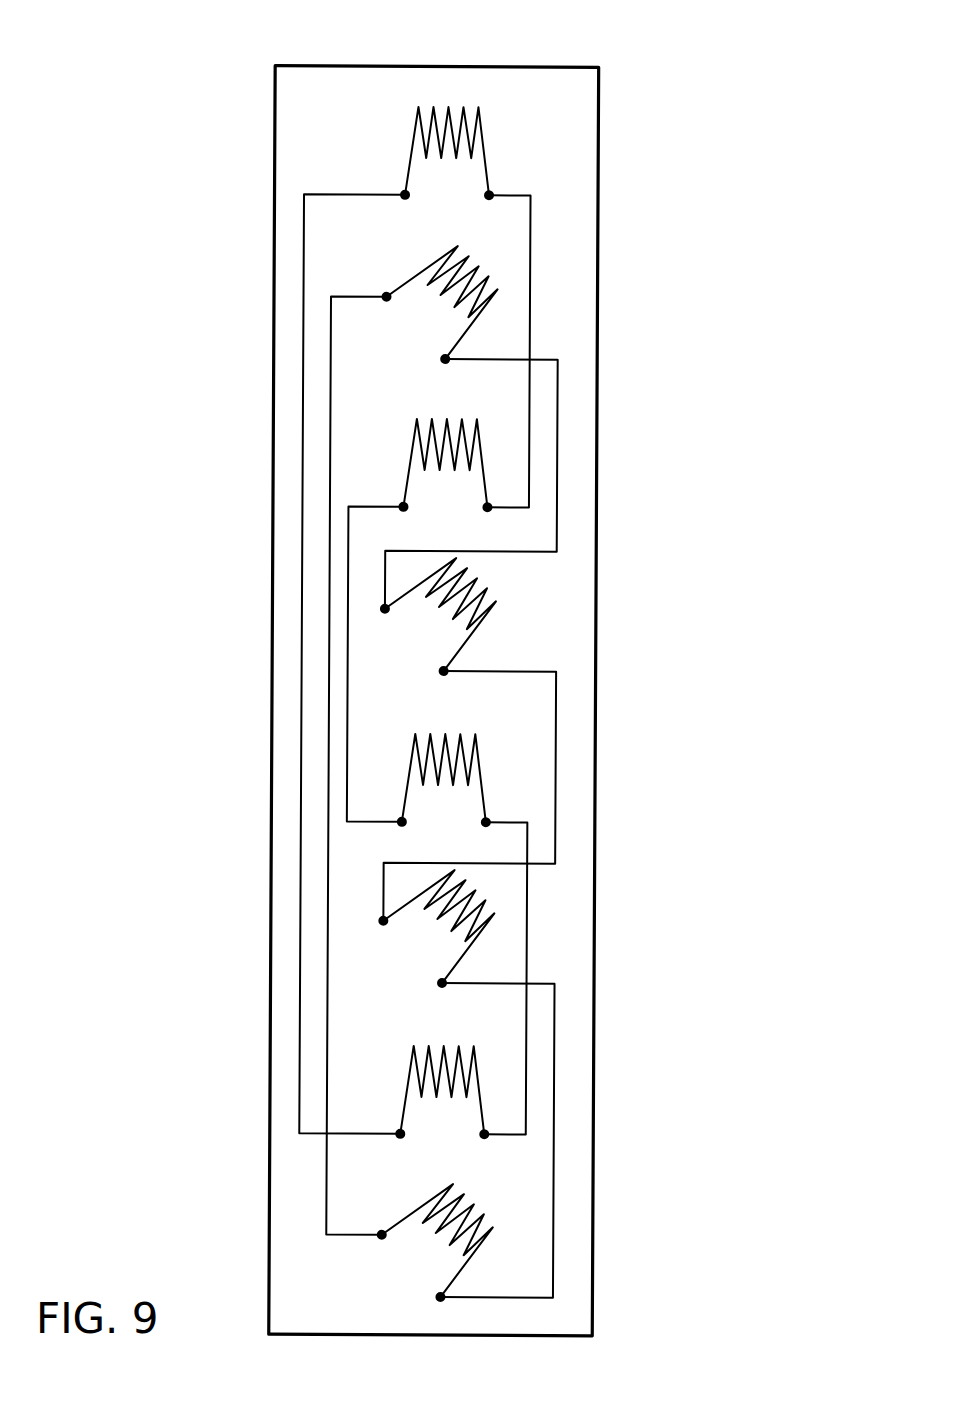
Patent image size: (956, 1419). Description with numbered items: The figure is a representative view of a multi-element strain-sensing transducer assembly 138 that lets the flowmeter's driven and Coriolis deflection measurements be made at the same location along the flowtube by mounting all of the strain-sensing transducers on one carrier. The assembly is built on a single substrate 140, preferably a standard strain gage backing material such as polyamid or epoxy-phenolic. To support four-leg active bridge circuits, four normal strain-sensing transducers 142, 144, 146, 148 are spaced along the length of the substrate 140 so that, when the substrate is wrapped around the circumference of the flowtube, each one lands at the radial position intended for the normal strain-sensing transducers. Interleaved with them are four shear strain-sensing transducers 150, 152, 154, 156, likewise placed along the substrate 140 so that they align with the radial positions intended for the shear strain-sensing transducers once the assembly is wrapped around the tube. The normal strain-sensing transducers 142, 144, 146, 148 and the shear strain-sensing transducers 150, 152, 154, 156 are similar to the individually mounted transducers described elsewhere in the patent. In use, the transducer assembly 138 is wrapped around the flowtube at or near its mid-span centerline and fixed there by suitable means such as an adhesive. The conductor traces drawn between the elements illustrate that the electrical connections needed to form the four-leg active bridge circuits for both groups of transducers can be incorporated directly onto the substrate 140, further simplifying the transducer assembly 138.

The transducer assembly 138 is at (626, 76).
The substrate 140 is at (275, 145).
The normal strain-sensing transducer 142 is at (480, 128).
The normal strain-sensing transducer 144 is at (447, 427).
The normal strain-sensing transducer 146 is at (415, 740).
The normal strain-sensing transducer 148 is at (416, 1062).
The shear strain-sensing transducer 150 is at (423, 268).
The shear strain-sensing transducer 152 is at (493, 608).
The shear strain-sensing transducer 154 is at (487, 928).
The shear strain-sensing transducer 156 is at (445, 1186).